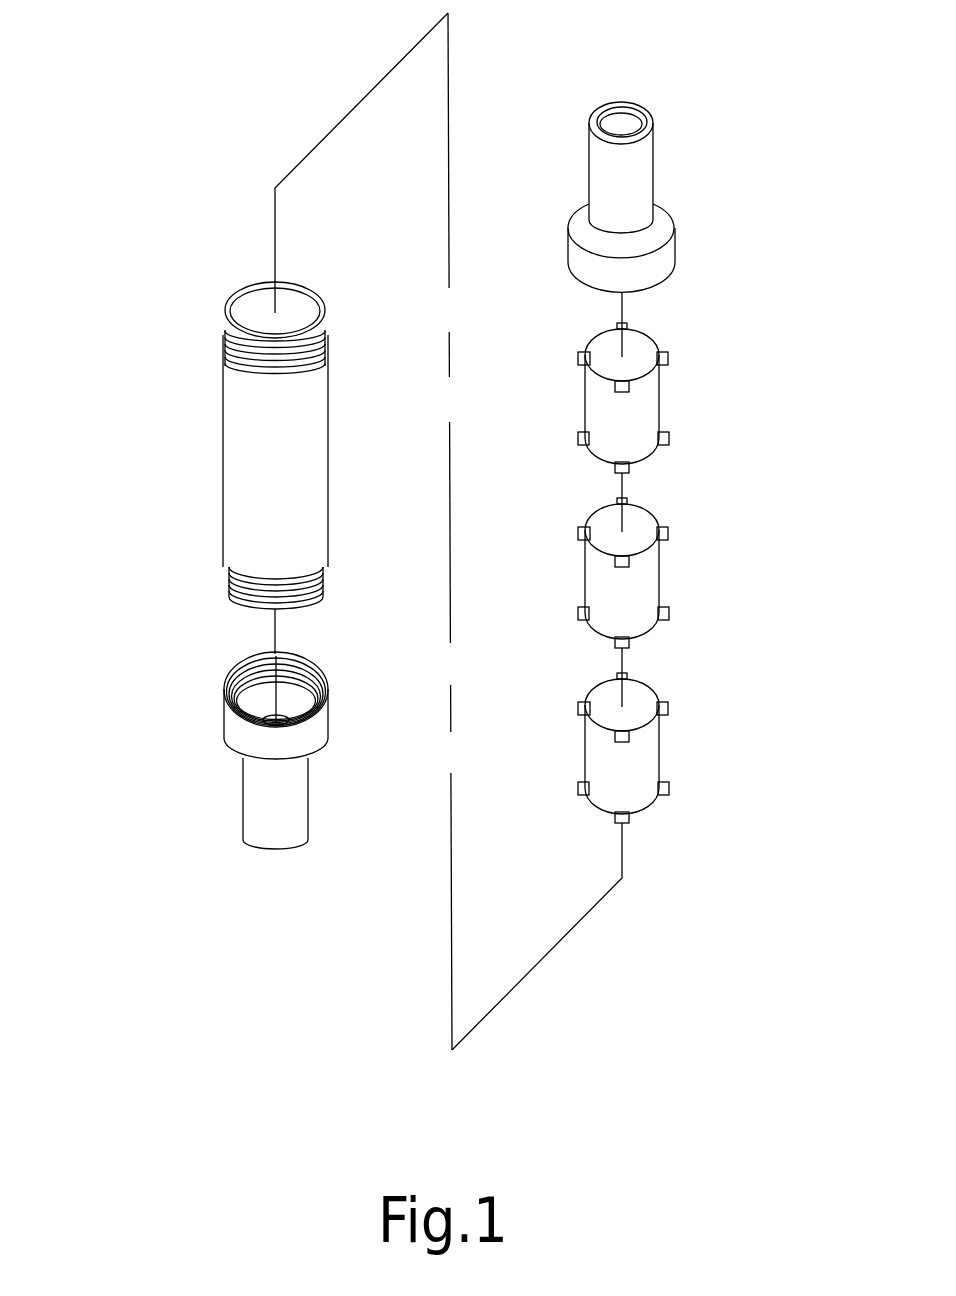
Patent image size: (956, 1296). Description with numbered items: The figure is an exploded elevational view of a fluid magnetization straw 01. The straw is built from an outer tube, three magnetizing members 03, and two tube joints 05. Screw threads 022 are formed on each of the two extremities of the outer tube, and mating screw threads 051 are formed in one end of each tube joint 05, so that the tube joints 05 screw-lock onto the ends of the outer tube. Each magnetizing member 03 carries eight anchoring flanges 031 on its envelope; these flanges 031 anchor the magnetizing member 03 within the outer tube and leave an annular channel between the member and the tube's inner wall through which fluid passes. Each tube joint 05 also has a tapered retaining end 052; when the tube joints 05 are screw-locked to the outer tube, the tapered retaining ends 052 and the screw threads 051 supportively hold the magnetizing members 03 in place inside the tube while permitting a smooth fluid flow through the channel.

The fluid magnetization straw 01 is at (718, 91).
The screw threads 022 is at (227, 333).
The tube joint 05 is at (227, 712).
The screw threads 051 is at (243, 675).
The tapered retaining end 052 is at (260, 703).
The magnetizing member 03 is at (660, 402).
The anchoring flange 031 is at (668, 353).